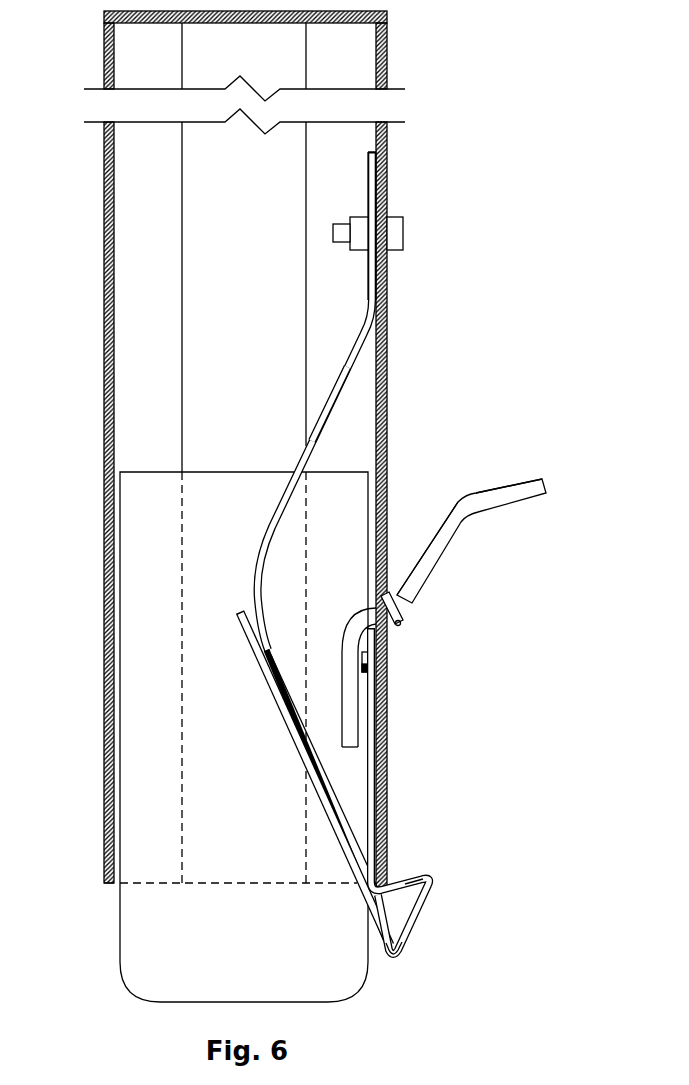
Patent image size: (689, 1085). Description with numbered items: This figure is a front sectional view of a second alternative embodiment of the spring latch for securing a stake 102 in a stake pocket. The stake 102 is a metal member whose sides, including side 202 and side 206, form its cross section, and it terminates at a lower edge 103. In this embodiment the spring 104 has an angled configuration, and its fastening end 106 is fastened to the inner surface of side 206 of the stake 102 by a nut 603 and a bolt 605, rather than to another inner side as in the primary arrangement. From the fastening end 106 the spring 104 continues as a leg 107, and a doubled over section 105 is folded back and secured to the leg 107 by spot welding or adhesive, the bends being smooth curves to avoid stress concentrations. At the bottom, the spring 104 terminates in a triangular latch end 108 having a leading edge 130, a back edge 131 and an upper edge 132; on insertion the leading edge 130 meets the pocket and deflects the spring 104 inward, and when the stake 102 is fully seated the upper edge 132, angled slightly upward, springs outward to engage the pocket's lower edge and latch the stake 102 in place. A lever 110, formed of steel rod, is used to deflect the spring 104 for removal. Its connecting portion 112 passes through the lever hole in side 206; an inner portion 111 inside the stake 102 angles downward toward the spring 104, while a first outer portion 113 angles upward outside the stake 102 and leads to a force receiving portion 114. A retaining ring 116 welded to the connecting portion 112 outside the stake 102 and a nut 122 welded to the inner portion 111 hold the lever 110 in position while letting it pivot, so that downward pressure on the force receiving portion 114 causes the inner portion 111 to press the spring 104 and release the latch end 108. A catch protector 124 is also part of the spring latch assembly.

The stake 102 is at (408, 158).
The side 202 is at (103, 287).
The side 206 is at (388, 330).
The lower edge 103 is at (108, 887).
The catch protector 124 is at (120, 930).
The spring 104 is at (330, 365).
The fastening end 106 is at (368, 186).
The leg 107 is at (327, 408).
The nut 603 is at (358, 218).
The bolt 605 is at (395, 226).
The doubled over section 105 is at (257, 657).
The lever 110 is at (493, 535).
The first outer portion 113 is at (440, 540).
The force receiving portion 114 is at (485, 500).
The connecting portion 112 is at (410, 600).
The retaining ring 116 is at (400, 623).
The inner portion 111 is at (360, 720).
The nut 122 is at (370, 672).
The latch end 108 is at (407, 855).
The leading edge 130 is at (425, 902).
The upper edge 132 is at (405, 880).
The back edge 131 is at (390, 958).